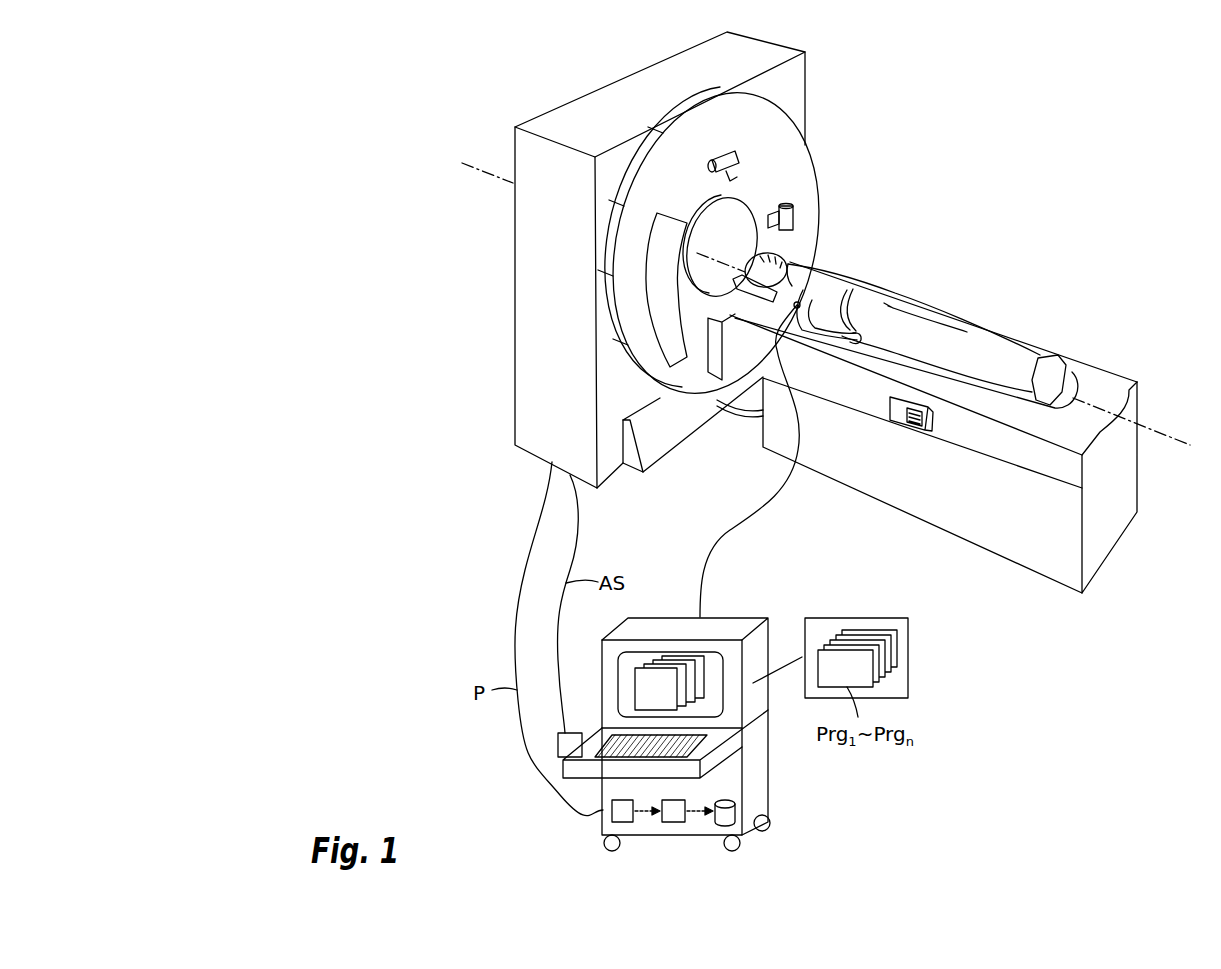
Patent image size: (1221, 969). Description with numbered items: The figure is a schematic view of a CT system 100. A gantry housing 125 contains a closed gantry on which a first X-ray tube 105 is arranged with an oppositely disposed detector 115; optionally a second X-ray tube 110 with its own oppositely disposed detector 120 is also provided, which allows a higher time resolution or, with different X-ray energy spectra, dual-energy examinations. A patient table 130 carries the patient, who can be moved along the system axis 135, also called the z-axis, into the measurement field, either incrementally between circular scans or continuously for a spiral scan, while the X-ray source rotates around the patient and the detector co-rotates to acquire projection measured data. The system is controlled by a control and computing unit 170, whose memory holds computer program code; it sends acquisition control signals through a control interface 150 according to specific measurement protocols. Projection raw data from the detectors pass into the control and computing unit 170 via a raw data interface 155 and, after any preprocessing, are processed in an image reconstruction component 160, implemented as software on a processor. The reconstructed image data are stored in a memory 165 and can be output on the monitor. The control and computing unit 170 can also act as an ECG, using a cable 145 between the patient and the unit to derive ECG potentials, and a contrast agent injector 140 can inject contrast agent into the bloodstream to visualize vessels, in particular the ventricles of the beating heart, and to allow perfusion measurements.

The CT system 100 is at (992, 155).
The first X-ray tube 105 is at (796, 219).
The second X-ray tube 110 is at (742, 159).
The detector 115 is at (680, 340).
The detector 120 is at (717, 345).
The gantry housing 125 is at (540, 450).
The patient table 130 is at (1022, 557).
The system axis 135 is at (1155, 422).
The contrast agent injector 140 is at (912, 433).
The cable 145 is at (730, 528).
The control interface 150 is at (558, 733).
The raw data interface 155 is at (622, 823).
The image reconstruction component 160 is at (673, 823).
The memory 165 is at (743, 808).
The control and computing unit 170 is at (758, 758).